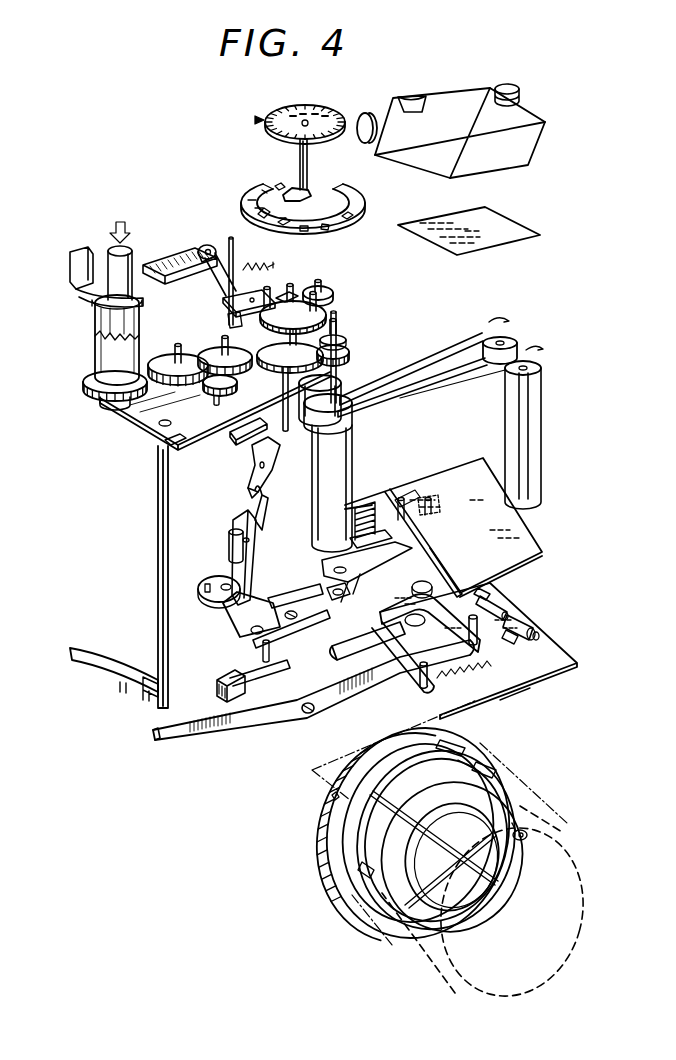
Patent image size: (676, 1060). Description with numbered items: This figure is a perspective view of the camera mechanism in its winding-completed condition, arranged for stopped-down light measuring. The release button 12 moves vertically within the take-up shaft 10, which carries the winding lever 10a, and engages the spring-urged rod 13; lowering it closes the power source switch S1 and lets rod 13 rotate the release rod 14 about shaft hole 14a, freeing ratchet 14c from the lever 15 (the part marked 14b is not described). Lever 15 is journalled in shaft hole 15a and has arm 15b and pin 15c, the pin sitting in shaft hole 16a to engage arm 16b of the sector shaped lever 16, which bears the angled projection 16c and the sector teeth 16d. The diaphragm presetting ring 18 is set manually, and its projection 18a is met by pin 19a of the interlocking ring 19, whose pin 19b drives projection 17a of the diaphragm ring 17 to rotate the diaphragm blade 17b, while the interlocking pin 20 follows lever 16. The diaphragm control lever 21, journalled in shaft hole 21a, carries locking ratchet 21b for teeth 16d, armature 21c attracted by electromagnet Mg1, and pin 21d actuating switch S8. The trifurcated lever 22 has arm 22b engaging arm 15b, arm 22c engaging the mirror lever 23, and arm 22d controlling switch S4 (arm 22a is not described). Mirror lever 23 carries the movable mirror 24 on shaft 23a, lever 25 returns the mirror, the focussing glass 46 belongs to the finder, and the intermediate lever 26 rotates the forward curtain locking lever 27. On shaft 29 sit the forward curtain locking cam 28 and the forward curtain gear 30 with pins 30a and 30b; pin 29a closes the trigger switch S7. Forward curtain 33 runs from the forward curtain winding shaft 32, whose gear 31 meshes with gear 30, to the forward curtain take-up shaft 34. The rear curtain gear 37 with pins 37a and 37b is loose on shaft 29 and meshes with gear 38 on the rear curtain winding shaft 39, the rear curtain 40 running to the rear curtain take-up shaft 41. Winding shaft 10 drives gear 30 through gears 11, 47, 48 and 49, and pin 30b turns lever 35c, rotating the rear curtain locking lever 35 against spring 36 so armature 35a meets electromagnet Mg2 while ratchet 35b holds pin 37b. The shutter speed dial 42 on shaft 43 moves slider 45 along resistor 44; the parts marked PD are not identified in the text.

The take-up shaft 10 is at (95, 335).
The winding lever 10a is at (92, 288).
The gear 11 is at (84, 384).
The release button 12 is at (108, 253).
The rod 13 is at (158, 496).
The release rod 14 is at (236, 738).
The shaft hole 14a is at (308, 714).
The arm end 14b is at (155, 736).
The ratchet 14c is at (428, 678).
The lever 15 is at (474, 655).
The shaft hole 15a is at (396, 676).
The arm 15b is at (344, 656).
The pin 15c is at (522, 626).
The sector shaped lever 16 is at (440, 576).
The shaft hole 16a is at (484, 594).
The arm 16b is at (522, 668).
The angled projection 16c is at (514, 638).
The sector teeth 16d is at (412, 584).
The diaphragm ring 17 is at (510, 808).
The projection 17a is at (448, 812).
The diaphragm blade 17b is at (528, 835).
The diaphragm presetting ring 18 is at (330, 843).
The projection 18a is at (456, 752).
The interlocking ring 19 is at (510, 774).
The pin 19a is at (367, 878).
The pin 19b is at (488, 770).
The interlocking pin 20 is at (505, 606).
The diaphragm control lever 21 is at (349, 584).
The shaft hole 21a is at (345, 584).
The locking ratchet 21b is at (418, 538).
The armature 21c is at (398, 498).
The pin 21d is at (427, 496).
The trifurcated lever 22 is at (282, 664).
The lever arm 22a is at (300, 596).
The arm 22b is at (324, 620).
The arm 22c is at (218, 608).
The arm 22d is at (263, 650).
The mirror lever 23 is at (232, 554).
The shaft hole 23a is at (258, 508).
The movable mirror 24 is at (440, 504).
The lever 25 is at (228, 533).
The intermediate lever 26 is at (246, 490).
The forward curtain locking lever 27 is at (268, 455).
The forward curtain locking cam 28 is at (352, 441).
The shaft 29 is at (283, 379).
The pin 29a is at (236, 390).
The forward curtain gear 30 is at (352, 356).
The pin 30a is at (343, 337).
The pin 30b is at (223, 347).
The gear 31 is at (338, 342).
The forward curtain winding shaft 32 is at (352, 408).
The forward curtain 33 is at (443, 414).
The forward curtain take-up shaft 34 is at (521, 423).
The rear curtain locking lever 35 is at (225, 292).
The armature 35a is at (210, 245).
The ratchet 35b is at (262, 303).
The lever 35c is at (229, 316).
The spring 36 is at (251, 265).
The rear curtain gear 37 is at (303, 302).
The pin 37a is at (336, 322).
The pin 37b is at (287, 292).
The gear 38 is at (327, 291).
The rear curtain winding shaft 39 is at (360, 400).
The rear curtain 40 is at (431, 348).
The rear curtain take-up shaft 41 is at (513, 339).
The shutter speed dial 42 is at (319, 111).
The shaft 43 is at (309, 152).
The resistor 44 is at (340, 208).
The slider 45 is at (287, 190).
The focussing glass 46 is at (500, 225).
The gear 47 is at (126, 416).
The gear 48 is at (166, 441).
The gear 49 is at (193, 357).
The photodetector PD is at (413, 97).
The electromagnet Mg1 is at (364, 505).
The electromagnet Mg2 is at (175, 256).
The power source switch S1 is at (102, 676).
The switch S4 is at (252, 680).
The trigger switch S7 is at (230, 436).
The switch S8 is at (440, 497).